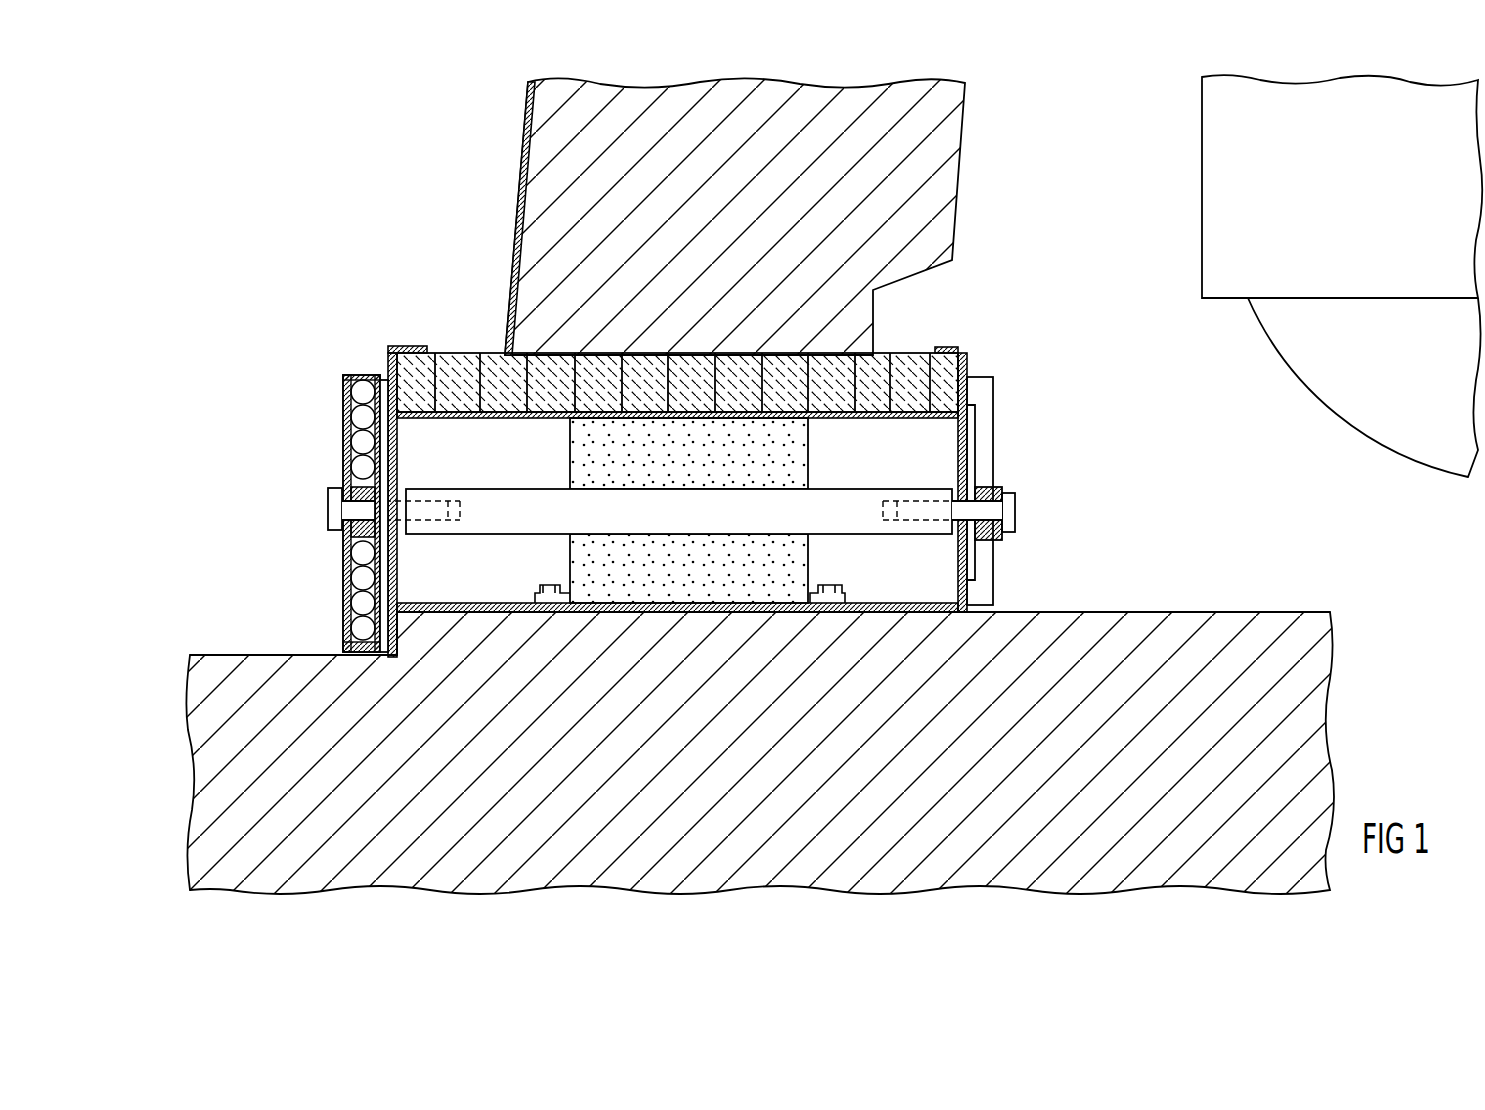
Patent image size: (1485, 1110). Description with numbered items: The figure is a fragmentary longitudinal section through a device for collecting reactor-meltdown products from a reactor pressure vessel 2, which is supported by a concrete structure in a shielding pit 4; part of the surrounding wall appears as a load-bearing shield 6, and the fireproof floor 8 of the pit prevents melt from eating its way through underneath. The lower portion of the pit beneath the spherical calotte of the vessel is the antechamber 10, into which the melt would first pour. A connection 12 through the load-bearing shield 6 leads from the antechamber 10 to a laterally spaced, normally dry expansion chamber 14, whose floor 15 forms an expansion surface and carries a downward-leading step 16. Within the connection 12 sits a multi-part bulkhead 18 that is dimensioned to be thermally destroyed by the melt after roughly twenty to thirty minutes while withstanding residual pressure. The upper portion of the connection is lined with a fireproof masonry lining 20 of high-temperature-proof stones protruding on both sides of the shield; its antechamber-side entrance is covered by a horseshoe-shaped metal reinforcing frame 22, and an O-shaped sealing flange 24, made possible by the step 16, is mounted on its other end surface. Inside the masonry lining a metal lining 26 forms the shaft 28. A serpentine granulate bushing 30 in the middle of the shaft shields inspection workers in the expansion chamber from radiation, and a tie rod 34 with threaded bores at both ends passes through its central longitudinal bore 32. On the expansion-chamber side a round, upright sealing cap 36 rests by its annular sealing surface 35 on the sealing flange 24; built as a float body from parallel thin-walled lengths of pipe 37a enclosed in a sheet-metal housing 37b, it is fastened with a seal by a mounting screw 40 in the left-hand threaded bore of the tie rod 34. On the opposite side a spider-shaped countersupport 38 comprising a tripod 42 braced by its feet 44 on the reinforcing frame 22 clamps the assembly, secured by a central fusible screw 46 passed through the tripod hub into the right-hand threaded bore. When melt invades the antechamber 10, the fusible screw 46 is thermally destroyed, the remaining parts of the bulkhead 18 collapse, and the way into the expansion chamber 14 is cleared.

The reactor pressure vessel 2 is at (1222, 137).
The shielding pit 4 is at (1083, 208).
The load-bearing shield 6 is at (740, 216).
The floor 8 is at (1243, 640).
The antechamber 10 is at (1192, 494).
The connection 12 is at (557, 355).
The expansion chamber 14 is at (240, 564).
The floor 15 is at (254, 656).
The step 16 is at (343, 655).
The bulkhead 18 is at (700, 444).
The masonry lining 20 is at (908, 353).
The reinforcing frame 22 is at (963, 353).
The sealing flange 24 is at (388, 353).
The lining 26 is at (490, 356).
The shaft 28 is at (529, 465).
The granulate bushing 30 is at (785, 575).
The longitudinal bore 32 is at (783, 490).
The tie rod 34 is at (490, 510).
The annular sealing surface 35 is at (386, 382).
The sealing cap 36 is at (321, 502).
The lengths of pipe 37a is at (353, 444).
The sheet-metal housing 37b is at (353, 556).
The countersupport 38 is at (988, 485).
The mounting screw 40 is at (328, 503).
The tripod 42 is at (986, 433).
The feet 44 is at (970, 398).
The fusible screw 46 is at (1013, 515).